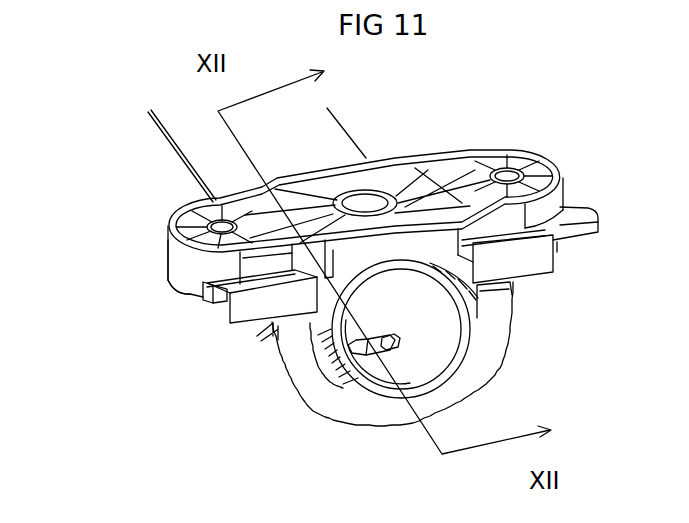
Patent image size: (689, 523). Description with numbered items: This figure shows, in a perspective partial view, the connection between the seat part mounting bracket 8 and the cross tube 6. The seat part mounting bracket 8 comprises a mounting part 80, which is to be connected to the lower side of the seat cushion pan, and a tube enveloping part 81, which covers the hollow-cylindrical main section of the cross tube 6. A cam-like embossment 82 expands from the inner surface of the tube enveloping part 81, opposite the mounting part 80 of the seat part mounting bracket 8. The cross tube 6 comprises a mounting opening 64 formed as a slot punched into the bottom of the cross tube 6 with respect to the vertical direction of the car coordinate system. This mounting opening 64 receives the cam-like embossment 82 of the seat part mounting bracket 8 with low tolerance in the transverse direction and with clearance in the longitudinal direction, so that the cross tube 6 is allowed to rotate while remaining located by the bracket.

The seat part mounting bracket 8 is at (545, 150).
The mounting part 80 is at (183, 270).
The cross tube 6 is at (430, 323).
The mounting opening 64 is at (393, 345).
The tube enveloping part 81 is at (302, 380).
The cam-like embossment 82 is at (363, 350).